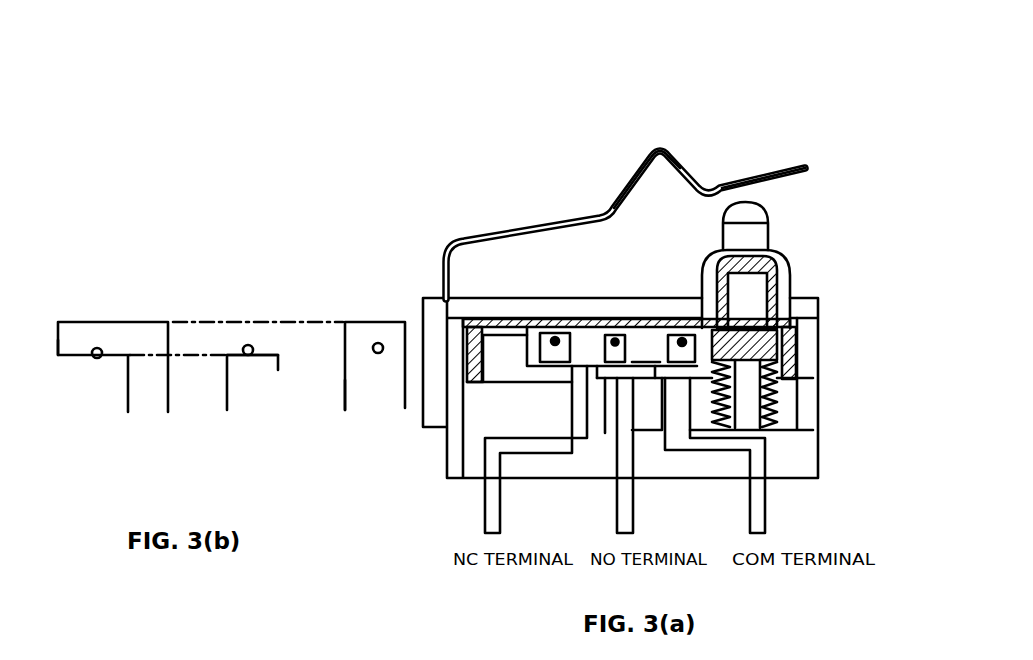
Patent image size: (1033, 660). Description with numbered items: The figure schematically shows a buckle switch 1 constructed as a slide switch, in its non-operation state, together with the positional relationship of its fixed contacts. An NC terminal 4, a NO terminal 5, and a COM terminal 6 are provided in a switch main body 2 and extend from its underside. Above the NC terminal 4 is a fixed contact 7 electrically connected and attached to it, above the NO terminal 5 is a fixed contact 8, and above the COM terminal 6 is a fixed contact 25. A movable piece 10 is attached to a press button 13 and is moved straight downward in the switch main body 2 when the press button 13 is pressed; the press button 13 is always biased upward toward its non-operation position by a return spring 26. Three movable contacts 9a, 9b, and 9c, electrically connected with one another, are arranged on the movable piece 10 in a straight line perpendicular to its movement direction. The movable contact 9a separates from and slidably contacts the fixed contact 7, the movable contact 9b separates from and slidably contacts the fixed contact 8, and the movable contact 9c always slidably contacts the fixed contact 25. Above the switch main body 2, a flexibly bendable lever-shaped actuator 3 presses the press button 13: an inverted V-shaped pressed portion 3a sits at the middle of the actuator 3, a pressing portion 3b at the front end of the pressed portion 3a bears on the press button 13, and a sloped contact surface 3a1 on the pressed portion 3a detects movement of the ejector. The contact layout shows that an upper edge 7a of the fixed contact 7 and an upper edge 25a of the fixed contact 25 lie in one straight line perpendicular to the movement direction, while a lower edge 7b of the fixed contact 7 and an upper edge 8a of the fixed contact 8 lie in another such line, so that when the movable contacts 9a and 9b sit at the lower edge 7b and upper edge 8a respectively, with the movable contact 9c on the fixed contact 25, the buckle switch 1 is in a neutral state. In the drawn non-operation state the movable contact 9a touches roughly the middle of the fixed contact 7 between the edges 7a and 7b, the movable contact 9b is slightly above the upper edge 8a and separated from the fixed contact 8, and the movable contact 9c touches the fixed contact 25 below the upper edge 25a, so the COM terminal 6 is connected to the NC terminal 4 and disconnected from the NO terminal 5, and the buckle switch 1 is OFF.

In FIG. 3A, the buckle switch 1 is at (436, 226).
In FIG. 3A, the switch main body 2 is at (818, 355).
In FIG. 3A, the actuator 3 is at (536, 227).
In FIG. 3A, the pressed portion 3a is at (662, 150).
In FIG. 3A, the contact surface 3a1 is at (638, 168).
In FIG. 3A, the pressing portion 3b is at (728, 185).
In FIG. 3A, the NC terminal 4 is at (500, 518).
In FIG. 3A, the NO terminal 5 is at (634, 496).
In FIG. 3A, the COM terminal 6 is at (765, 518).
In FIG. 3A, the fixed contact 7 is at (535, 345).
In FIG. 3B, the fixed contact 7 is at (92, 336).
In FIG. 3B, the upper edge 7a is at (117, 320).
In FIG. 3B, the lower edge 7b is at (67, 358).
In FIG. 3A, the fixed contact 8 is at (600, 368).
In FIG. 3B, the fixed contact 8 is at (262, 375).
In FIG. 3B, the upper edge 8a is at (266, 347).
In FIG. 3A, the movable contact 9a is at (558, 338).
In FIG. 3B, the movable contact 9a is at (96, 360).
In FIG. 3A, the movable contact 9b is at (612, 338).
In FIG. 3B, the movable contact 9b is at (246, 356).
In FIG. 3A, the movable contact 9c is at (680, 338).
In FIG. 3B, the movable contact 9c is at (372, 348).
In FIG. 3A, the movable piece 10 is at (641, 340).
In FIG. 3A, the press button 13 is at (755, 206).
In FIG. 3A, the fixed contact 25 is at (653, 380).
In FIG. 3B, the fixed contact 25 is at (350, 392).
In FIG. 3B, the upper edge 25a is at (370, 318).
In FIG. 3A, the return spring 26 is at (778, 402).